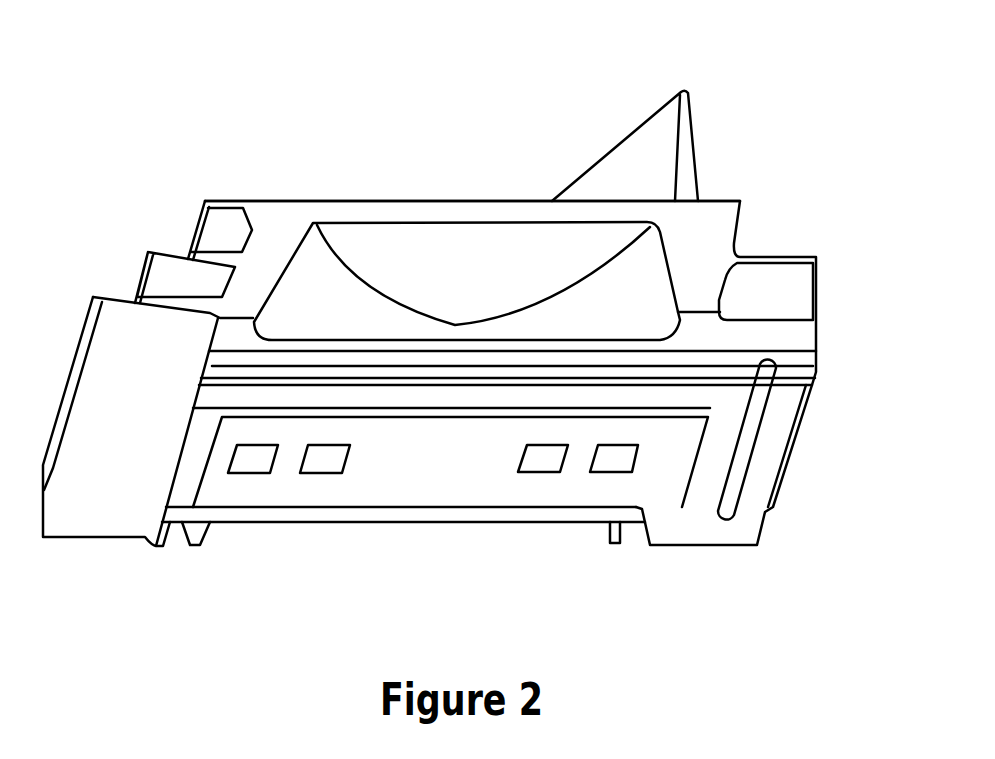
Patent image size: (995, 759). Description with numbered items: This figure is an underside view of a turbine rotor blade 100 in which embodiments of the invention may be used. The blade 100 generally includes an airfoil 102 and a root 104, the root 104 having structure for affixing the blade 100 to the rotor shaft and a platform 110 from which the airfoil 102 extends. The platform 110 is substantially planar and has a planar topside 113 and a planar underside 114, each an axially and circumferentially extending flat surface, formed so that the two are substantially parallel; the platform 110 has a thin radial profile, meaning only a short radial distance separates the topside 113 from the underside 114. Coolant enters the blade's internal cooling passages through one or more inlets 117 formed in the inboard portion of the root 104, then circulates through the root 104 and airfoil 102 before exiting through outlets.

The turbine rotor blade 100 is at (186, 73).
The platform 110 is at (222, 188).
The airfoil 102 is at (645, 145).
The root 104 is at (830, 409).
The topside 113 is at (363, 200).
The underside 114 is at (495, 295).
The inlets 117 is at (253, 460).